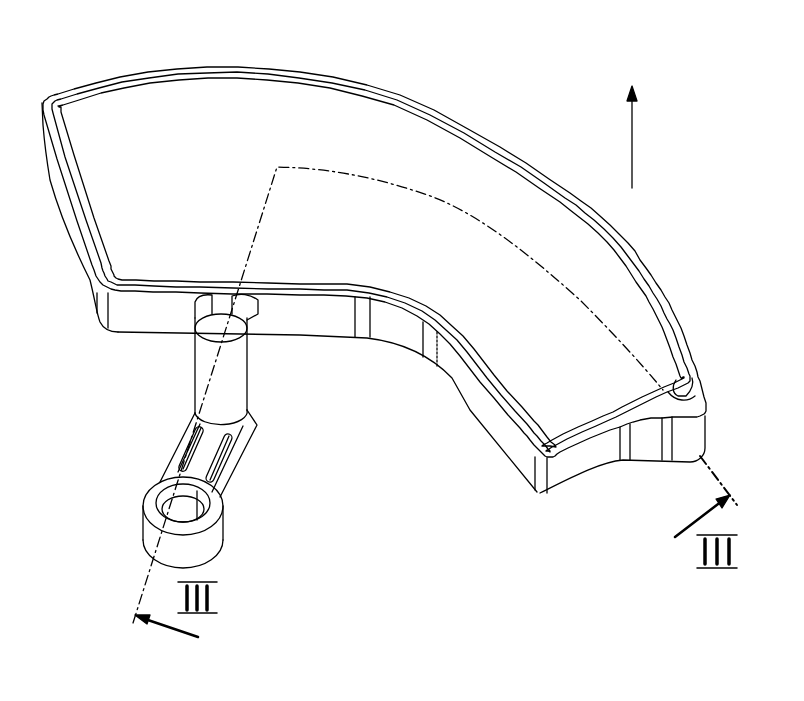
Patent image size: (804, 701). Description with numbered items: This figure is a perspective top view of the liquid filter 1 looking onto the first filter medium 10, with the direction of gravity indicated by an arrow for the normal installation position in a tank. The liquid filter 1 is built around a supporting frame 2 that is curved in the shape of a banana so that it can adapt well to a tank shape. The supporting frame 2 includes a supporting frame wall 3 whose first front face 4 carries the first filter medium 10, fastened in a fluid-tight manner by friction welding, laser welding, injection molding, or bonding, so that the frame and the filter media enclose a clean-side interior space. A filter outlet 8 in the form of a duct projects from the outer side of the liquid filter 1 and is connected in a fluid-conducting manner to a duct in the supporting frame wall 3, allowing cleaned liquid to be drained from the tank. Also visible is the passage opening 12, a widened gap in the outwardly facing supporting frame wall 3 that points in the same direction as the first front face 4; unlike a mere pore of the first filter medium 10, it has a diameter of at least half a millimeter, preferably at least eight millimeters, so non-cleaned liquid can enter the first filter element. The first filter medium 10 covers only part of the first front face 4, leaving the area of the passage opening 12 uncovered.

The liquid filter 1 is at (672, 182).
The supporting frame 2 is at (560, 472).
The supporting frame wall 3 is at (294, 298).
The first front face 4 is at (677, 320).
The filter outlet 8 is at (197, 389).
The first filter medium 10 is at (435, 173).
The passage opening 12 is at (686, 370).